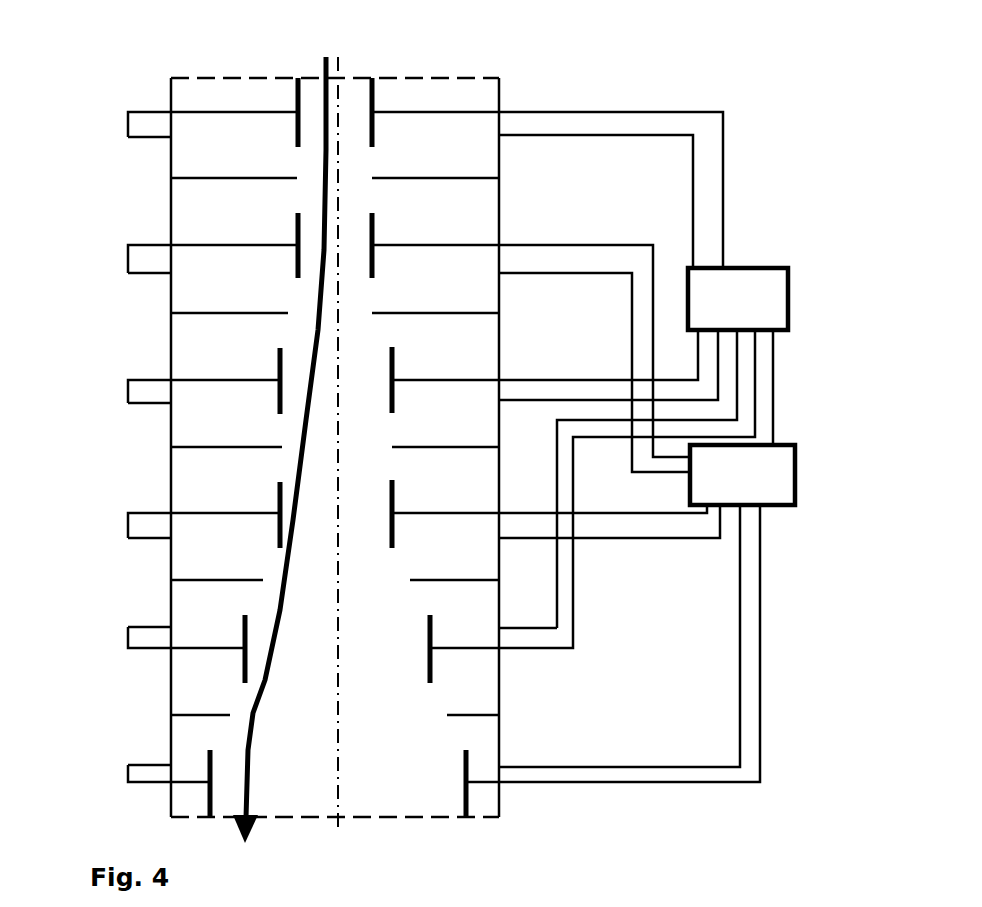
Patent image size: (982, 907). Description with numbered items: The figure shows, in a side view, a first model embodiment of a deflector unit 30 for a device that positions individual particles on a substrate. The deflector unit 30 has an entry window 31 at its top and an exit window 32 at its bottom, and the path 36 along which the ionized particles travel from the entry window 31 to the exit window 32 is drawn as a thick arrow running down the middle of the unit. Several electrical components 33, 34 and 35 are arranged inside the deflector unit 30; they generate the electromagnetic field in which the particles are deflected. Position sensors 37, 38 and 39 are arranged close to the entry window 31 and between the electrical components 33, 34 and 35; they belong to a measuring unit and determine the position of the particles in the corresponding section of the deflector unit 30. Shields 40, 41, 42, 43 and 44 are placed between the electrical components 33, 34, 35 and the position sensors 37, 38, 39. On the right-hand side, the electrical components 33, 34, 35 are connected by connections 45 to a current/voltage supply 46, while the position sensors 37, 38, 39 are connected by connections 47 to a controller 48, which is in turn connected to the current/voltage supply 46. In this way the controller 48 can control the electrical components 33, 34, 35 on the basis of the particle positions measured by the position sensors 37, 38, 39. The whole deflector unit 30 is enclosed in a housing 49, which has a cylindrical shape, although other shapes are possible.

The deflector unit 30 is at (150, 90).
The entry window 31 is at (433, 80).
The exit window 32 is at (375, 818).
The electrical component 33 is at (297, 222).
The electrical component 34 is at (279, 485).
The electrical component 35 is at (210, 750).
The path 36 is at (253, 713).
The position sensor 37 is at (297, 135).
The position sensor 38 is at (279, 400).
The position sensor 39 is at (244, 668).
The shield 40 is at (485, 180).
The shield 41 is at (457, 310).
The shield 42 is at (455, 447).
The shield 43 is at (460, 578).
The shield 44 is at (472, 715).
The connections 45 is at (725, 150).
The current/voltage supply 46 is at (750, 473).
The connections 47 is at (774, 372).
The controller 48 is at (748, 300).
The housing 49 is at (500, 213).